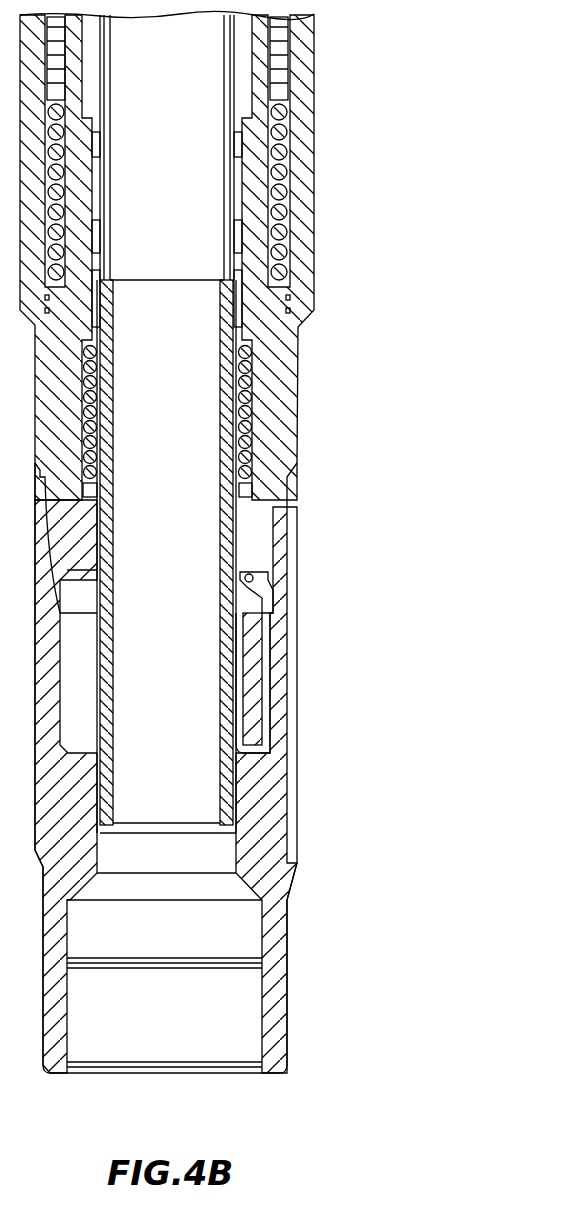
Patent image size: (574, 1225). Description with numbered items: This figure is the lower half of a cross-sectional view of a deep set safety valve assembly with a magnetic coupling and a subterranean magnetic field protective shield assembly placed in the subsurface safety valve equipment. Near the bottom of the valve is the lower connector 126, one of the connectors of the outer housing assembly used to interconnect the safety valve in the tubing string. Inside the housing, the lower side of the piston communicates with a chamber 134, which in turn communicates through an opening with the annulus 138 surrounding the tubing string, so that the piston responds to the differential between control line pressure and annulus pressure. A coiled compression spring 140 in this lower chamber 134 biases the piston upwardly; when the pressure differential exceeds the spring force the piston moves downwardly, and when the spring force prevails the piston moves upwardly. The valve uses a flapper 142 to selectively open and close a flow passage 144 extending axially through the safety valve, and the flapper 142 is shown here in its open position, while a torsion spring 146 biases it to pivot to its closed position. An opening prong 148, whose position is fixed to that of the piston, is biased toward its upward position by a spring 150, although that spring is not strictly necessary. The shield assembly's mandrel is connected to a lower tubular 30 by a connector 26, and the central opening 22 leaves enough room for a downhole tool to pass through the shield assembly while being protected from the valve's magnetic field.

The central opening 22 is at (200, 65).
The connector 26 is at (222, 270).
The lower tubular 30 is at (215, 623).
The lower connector 126 is at (277, 998).
The chamber 134 is at (287, 118).
The annulus 138 is at (365, 855).
The spring 140 is at (290, 150).
The flapper 142 is at (240, 634).
The flow passage 144 is at (195, 665).
The torsion spring 146 is at (265, 582).
The opening prong 148 is at (240, 740).
The spring 150 is at (253, 400).